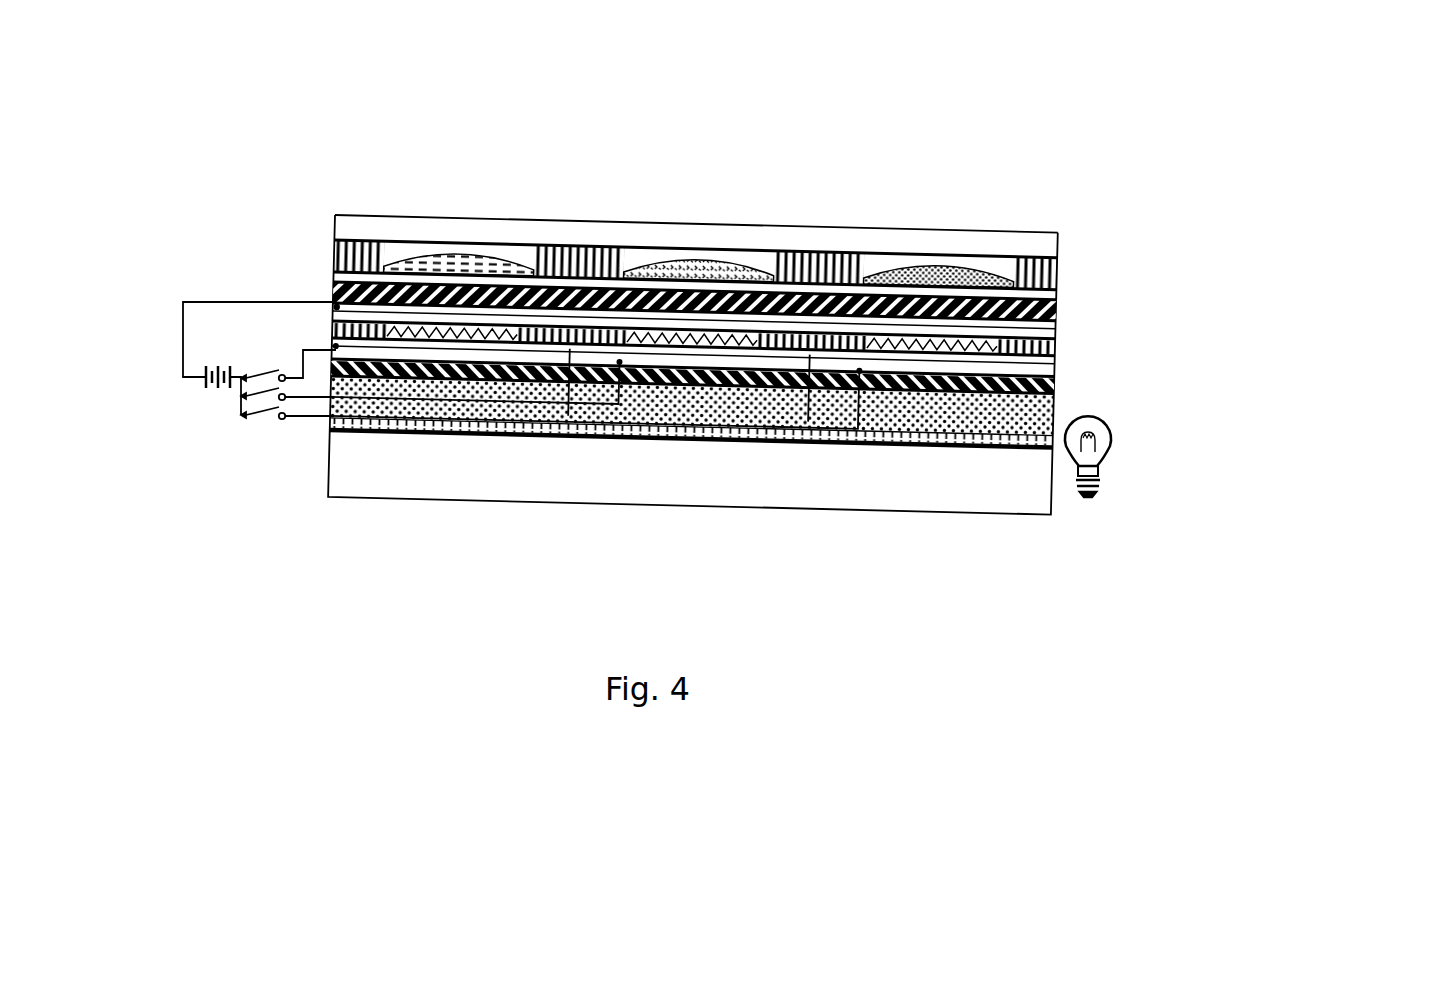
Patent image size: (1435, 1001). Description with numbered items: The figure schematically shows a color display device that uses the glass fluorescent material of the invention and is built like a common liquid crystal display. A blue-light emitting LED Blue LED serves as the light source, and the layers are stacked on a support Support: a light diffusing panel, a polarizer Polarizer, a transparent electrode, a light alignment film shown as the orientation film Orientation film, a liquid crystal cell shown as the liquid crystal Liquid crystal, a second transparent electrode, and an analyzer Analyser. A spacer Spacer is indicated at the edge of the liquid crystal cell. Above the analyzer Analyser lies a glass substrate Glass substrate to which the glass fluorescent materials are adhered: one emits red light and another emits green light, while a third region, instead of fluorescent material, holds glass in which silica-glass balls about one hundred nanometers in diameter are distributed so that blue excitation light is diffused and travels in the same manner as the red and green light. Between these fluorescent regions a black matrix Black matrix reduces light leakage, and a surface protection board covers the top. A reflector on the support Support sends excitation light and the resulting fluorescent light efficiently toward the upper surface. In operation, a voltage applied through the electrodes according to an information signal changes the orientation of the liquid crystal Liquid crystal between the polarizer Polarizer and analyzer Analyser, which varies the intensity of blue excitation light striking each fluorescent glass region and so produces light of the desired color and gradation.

The support substrate Support is at (693, 404).
The black matrix Black matrix is at (1058, 270).
The glass substrate Glass substrate is at (1060, 291).
The analyzer Analyser is at (1060, 317).
The liquid crystal cell Liquid crystal is at (430, 320).
The light alignment film Orientation film is at (1060, 347).
The polarizer Polarizer is at (1062, 391).
The spacer Spacer is at (333, 307).
The blue-light emitting LED Blue LED is at (1112, 462).